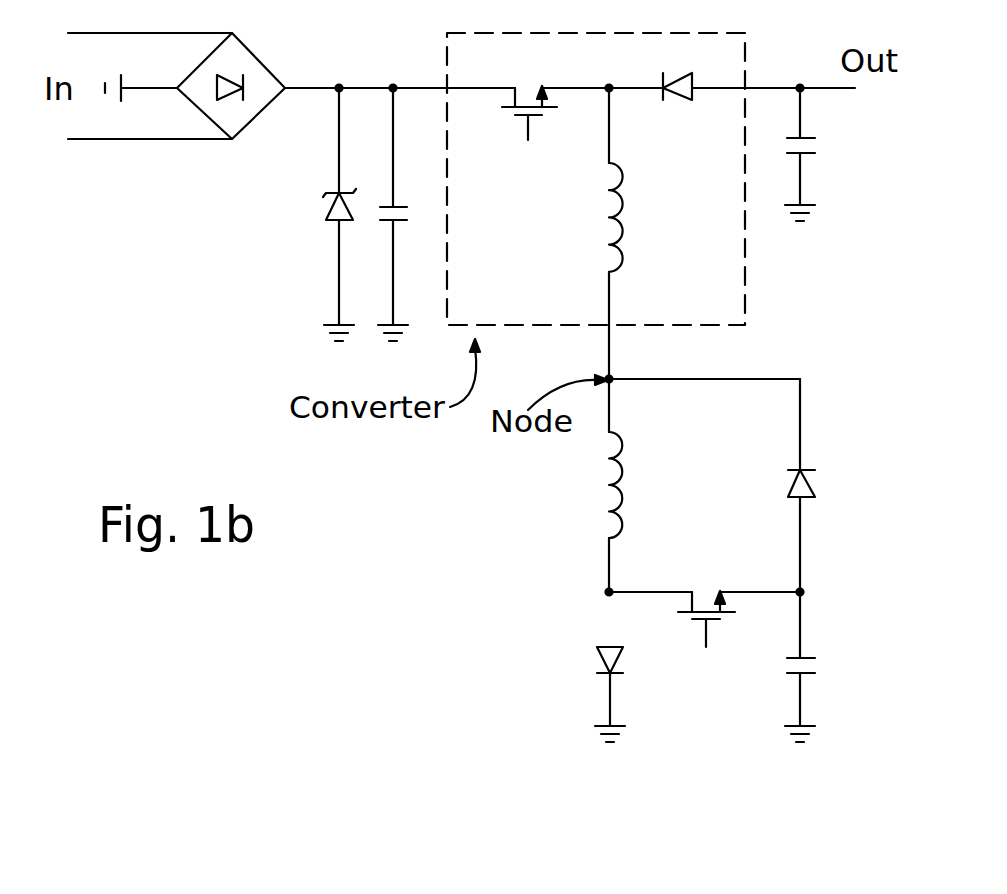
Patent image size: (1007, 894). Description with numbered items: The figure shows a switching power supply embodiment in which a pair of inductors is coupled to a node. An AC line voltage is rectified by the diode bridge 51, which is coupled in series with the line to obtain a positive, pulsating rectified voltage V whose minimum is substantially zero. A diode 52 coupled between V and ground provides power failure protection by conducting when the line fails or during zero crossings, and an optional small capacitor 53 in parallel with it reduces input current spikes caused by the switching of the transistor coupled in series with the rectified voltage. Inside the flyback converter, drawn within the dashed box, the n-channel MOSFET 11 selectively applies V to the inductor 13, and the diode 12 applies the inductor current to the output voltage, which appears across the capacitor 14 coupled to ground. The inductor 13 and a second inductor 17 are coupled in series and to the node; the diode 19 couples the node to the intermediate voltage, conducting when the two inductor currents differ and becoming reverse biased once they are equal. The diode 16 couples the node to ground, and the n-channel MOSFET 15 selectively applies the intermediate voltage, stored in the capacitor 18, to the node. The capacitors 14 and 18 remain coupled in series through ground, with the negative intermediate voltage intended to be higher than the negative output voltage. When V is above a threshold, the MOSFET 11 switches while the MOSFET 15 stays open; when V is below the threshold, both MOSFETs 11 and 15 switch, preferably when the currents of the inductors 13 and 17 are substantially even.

The diode bridge 51 is at (260, 57).
The diode 52 is at (330, 222).
The capacitor 53 is at (383, 222).
The n-channel MOSFET 11 is at (505, 110).
The diode 12 is at (680, 98).
The inductor 13 is at (622, 260).
The capacitor 14 is at (803, 155).
The inductor 17 is at (622, 526).
The diode 19 is at (808, 500).
The n-channel MOSFET 15 is at (715, 621).
The diode 16 is at (618, 675).
The capacitor 18 is at (808, 675).